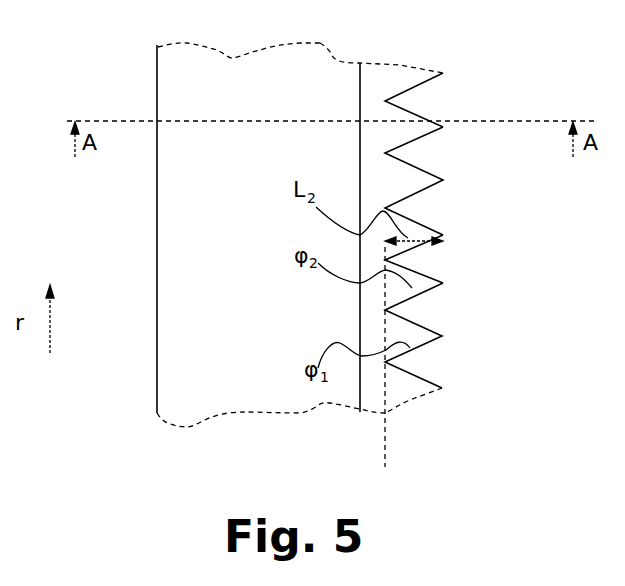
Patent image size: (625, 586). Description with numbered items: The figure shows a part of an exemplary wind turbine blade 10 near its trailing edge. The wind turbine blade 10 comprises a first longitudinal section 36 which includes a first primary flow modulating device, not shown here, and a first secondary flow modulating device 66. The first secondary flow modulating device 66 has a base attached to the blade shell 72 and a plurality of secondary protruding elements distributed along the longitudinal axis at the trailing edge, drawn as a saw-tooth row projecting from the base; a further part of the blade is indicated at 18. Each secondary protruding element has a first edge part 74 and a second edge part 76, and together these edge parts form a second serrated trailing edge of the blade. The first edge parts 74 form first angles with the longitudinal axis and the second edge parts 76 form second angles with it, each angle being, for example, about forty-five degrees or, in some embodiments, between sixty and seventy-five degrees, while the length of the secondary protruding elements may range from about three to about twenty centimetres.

The wind turbine blade 10 is at (146, 73).
The friction ring 18 is at (157, 267).
The first longitudinal section 36 is at (190, 198).
The first secondary flow modulating device 66 is at (376, 86).
The blade shell 72 is at (192, 337).
The first edge parts 74 is at (413, 245).
The second edge parts 76 is at (408, 213).